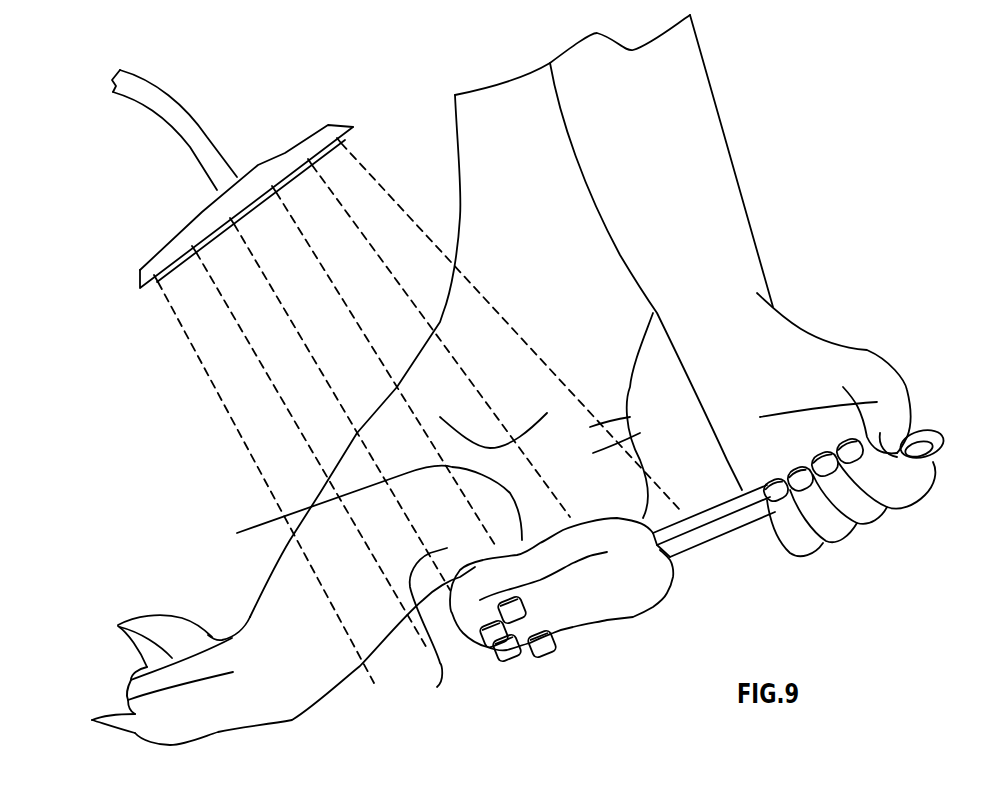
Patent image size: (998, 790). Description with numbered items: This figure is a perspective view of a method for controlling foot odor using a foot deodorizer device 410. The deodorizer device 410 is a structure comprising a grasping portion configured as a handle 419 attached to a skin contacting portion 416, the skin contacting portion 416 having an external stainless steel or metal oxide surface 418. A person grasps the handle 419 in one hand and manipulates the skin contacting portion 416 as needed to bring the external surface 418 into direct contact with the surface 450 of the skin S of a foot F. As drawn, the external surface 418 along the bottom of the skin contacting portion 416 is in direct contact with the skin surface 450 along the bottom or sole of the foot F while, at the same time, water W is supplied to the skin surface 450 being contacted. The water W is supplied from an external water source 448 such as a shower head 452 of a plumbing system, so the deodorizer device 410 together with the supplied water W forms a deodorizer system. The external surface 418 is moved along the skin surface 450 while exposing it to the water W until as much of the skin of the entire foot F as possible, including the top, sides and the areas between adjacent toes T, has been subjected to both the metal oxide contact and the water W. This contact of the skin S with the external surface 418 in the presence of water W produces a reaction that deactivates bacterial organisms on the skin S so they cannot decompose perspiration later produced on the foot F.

The external water source 448 is at (186, 203).
The shower head 452 is at (280, 158).
The skin surface 450 is at (360, 507).
The water W is at (197, 361).
The handle 419 is at (919, 412).
The external stainless steel or metal oxide surface 418 is at (634, 591).
The deodorizer device 410 is at (610, 624).
The skin contacting portion 416 is at (465, 650).
The toes T is at (144, 675).
The skin S is at (437, 687).
The foot F is at (312, 684).